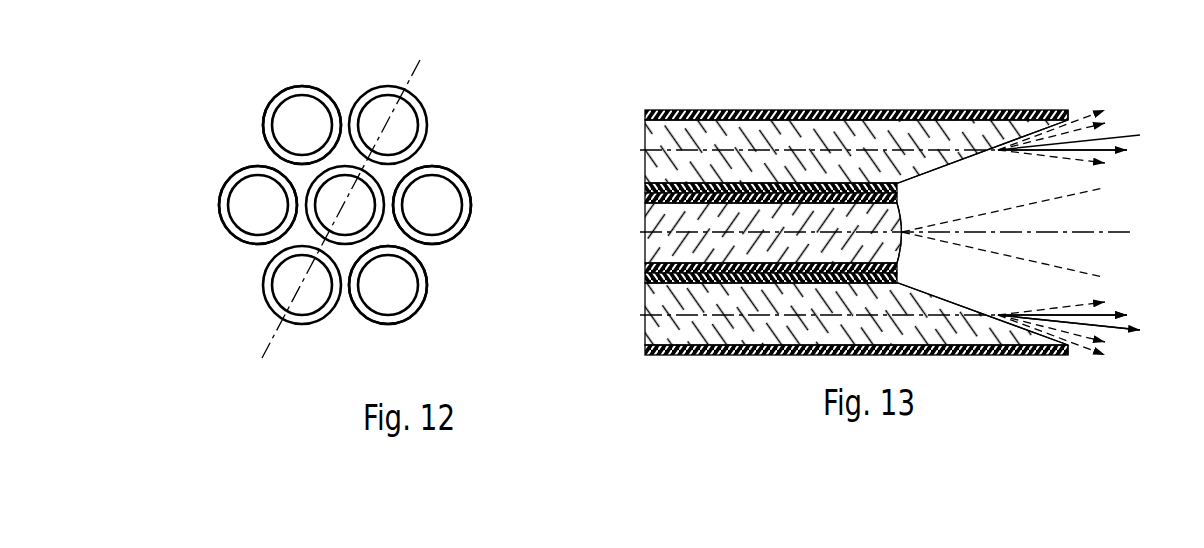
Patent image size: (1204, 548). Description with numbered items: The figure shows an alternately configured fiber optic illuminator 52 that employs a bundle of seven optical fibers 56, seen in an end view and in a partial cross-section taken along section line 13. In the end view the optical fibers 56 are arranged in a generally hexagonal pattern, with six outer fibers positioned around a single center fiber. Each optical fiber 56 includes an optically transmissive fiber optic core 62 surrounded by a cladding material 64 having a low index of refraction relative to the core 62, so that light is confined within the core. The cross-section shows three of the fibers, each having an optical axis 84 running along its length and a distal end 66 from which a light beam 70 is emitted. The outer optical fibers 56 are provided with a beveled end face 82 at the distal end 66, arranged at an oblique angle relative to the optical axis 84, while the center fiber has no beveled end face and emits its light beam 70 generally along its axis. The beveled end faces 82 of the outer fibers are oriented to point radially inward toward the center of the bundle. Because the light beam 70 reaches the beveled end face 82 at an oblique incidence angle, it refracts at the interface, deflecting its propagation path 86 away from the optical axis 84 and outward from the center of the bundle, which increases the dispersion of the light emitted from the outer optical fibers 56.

In FIG. 12, the section line 13 is at (420, 60).
In FIG. 12, the fiber optic illuminator 52 is at (341, 195).
In FIG. 12, the optical fiber 56 is at (323, 90).
In FIG. 13, the optical fiber 56 is at (822, 186).
In FIG. 12, the fiber optic core 62 is at (283, 137).
In FIG. 13, the fiber optic core 62 is at (795, 150).
In FIG. 12, the cladding material 64 is at (268, 124).
In FIG. 13, the cladding material 64 is at (706, 148).
In FIG. 13, the distal end 66 is at (1068, 113).
In FIG. 13, the light beam 70 is at (1082, 108).
In FIG. 13, the beveled end face 82 is at (950, 164).
In FIG. 13, the optical axis 84 is at (873, 235).
In FIG. 13, the propagation path 86 is at (1117, 132).